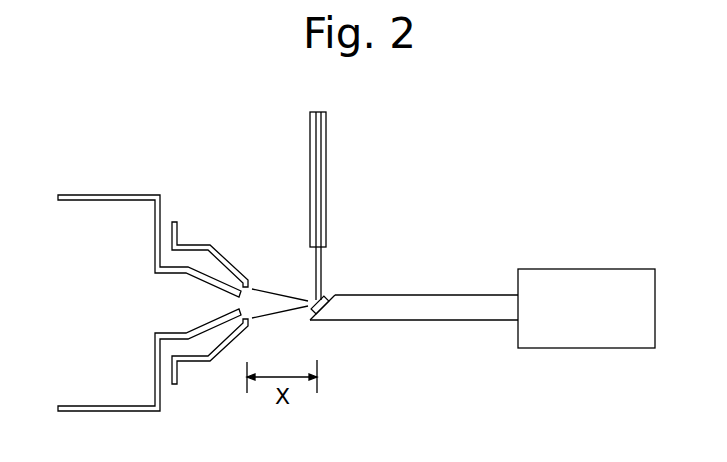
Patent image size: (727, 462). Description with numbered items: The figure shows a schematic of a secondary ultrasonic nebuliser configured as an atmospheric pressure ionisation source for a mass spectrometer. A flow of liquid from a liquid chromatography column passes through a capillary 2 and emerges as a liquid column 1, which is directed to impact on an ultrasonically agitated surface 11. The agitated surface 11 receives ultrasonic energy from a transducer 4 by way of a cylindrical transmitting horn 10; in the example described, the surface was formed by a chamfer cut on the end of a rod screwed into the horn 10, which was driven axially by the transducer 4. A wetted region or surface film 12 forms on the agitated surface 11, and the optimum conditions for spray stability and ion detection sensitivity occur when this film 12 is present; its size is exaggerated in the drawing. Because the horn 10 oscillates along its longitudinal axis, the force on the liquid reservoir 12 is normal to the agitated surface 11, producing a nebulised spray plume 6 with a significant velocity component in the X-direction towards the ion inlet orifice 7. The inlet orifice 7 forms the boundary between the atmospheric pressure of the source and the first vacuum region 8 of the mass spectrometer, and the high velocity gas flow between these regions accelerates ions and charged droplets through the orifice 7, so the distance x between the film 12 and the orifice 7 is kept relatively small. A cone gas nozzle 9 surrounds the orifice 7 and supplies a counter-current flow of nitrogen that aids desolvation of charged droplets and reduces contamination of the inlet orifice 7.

The liquid column 1 is at (323, 262).
The capillary 2 is at (327, 126).
The transducer 4 is at (620, 269).
The nebulised spray plume 6 is at (277, 300).
The ion inlet orifice 7 is at (240, 302).
The first vacuum region 8 is at (73, 245).
The cone gas nozzle 9 is at (230, 257).
The cylindrical transmitting horn 10 is at (462, 296).
The ultrasonically agitated surface 11 is at (330, 300).
The surface film 12 is at (312, 312).